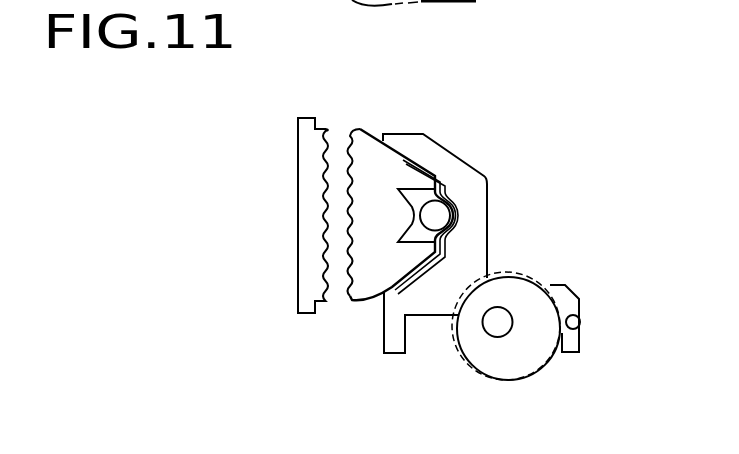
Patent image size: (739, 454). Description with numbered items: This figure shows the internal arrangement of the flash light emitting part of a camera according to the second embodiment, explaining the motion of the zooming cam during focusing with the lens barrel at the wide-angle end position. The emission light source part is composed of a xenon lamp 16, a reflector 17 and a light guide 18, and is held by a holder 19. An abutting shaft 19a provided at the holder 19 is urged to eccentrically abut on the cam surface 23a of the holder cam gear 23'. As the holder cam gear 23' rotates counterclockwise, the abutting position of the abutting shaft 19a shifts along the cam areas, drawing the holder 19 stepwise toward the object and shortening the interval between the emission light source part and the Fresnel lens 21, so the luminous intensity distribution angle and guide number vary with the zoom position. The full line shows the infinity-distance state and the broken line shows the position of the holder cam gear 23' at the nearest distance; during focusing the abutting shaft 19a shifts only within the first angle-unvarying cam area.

The xenon lamp 16 is at (442, 218).
The reflector 17 is at (430, 160).
The light guide 18 is at (363, 140).
The holder 19 is at (478, 232).
The abutting shaft 19a is at (579, 323).
The Fresnel lens 21 is at (305, 172).
The holder cam gear 23' is at (536, 299).
The cam surface 23a is at (537, 372).